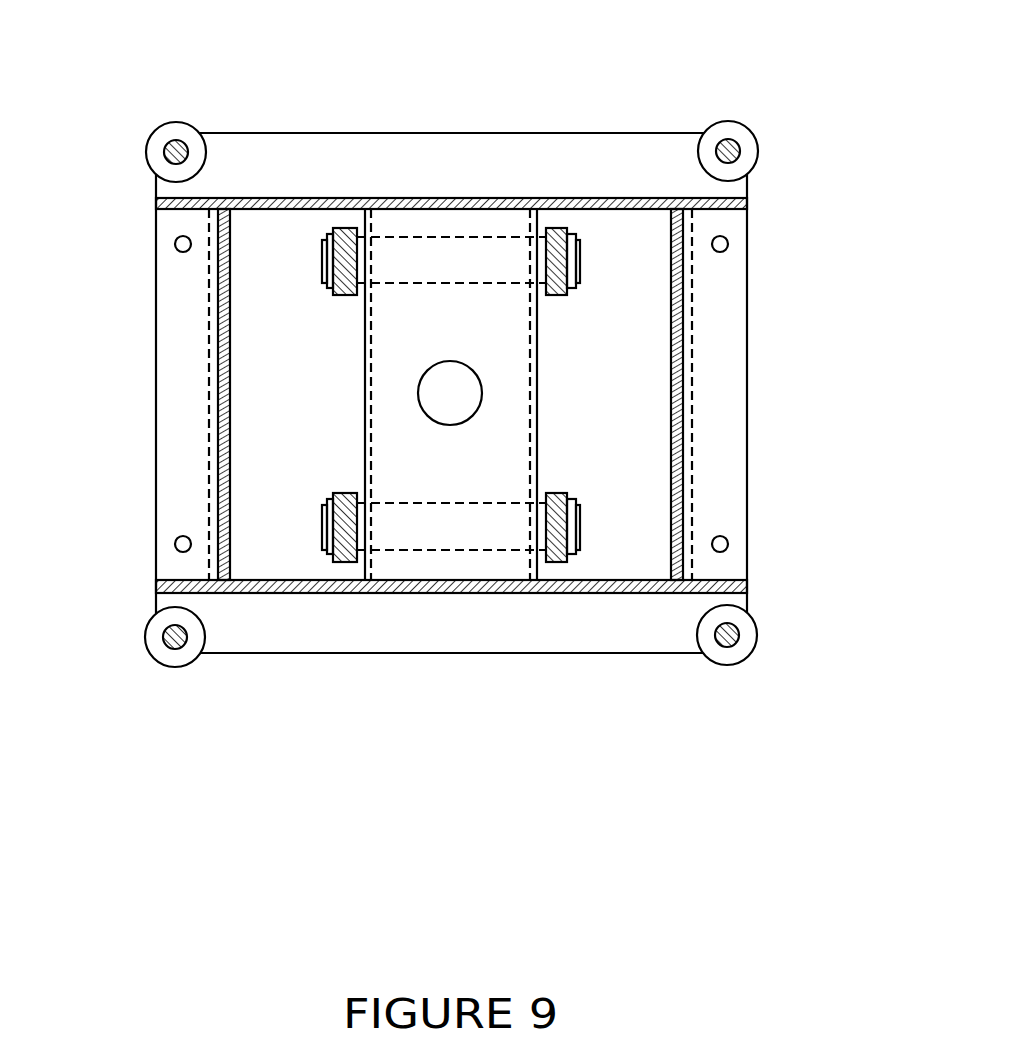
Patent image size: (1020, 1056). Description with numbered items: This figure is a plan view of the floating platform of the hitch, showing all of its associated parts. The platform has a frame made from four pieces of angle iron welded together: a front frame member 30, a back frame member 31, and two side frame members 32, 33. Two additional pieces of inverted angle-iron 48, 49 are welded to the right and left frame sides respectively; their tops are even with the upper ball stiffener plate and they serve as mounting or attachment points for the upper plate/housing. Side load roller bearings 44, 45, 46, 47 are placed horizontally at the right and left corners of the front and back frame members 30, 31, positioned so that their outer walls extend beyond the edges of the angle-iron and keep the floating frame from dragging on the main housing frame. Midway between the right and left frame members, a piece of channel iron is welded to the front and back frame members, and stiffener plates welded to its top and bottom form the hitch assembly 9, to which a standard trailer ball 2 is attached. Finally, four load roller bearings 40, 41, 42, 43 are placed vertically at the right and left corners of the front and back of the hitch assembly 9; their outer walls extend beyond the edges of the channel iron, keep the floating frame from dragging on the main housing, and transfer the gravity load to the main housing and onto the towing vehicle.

The trailer ball 2 is at (483, 405).
The hitch assembly 9 is at (500, 348).
The front frame member 30 is at (365, 133).
The back frame member 31 is at (443, 653).
The frame member 32 is at (683, 418).
The frame member 33 is at (218, 398).
The load roller bearing 40 is at (560, 228).
The load roller bearing 41 is at (343, 228).
The load roller bearing 42 is at (560, 562).
The load roller bearing 43 is at (345, 562).
The side load roller bearing 44 is at (735, 122).
The side load roller bearing 45 is at (170, 122).
The side load roller bearing 46 is at (742, 661).
The side load roller bearing 47 is at (163, 663).
The inverted angle-iron 48 is at (747, 340).
The inverted angle-iron 49 is at (155, 363).